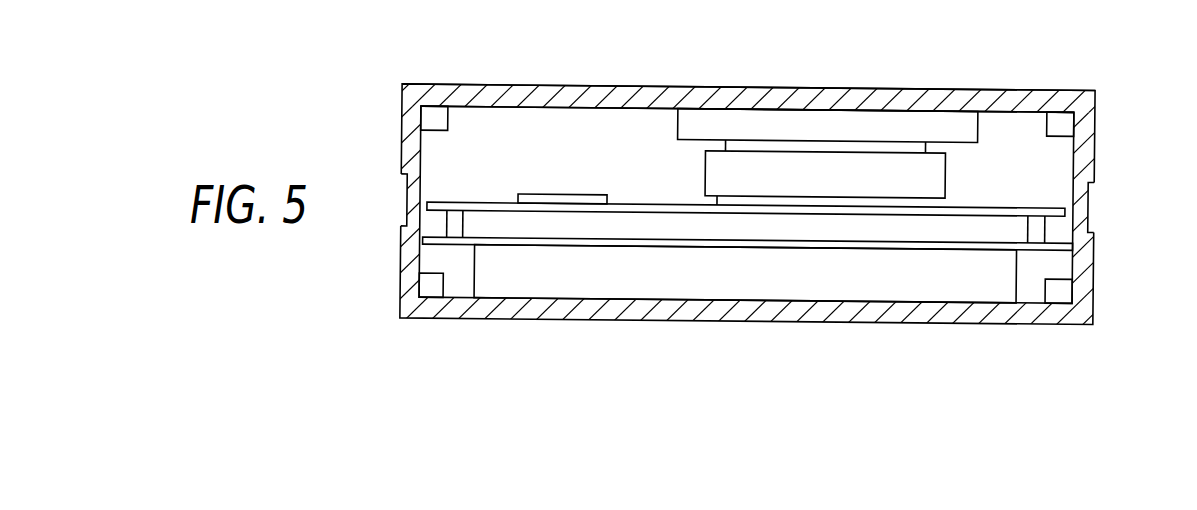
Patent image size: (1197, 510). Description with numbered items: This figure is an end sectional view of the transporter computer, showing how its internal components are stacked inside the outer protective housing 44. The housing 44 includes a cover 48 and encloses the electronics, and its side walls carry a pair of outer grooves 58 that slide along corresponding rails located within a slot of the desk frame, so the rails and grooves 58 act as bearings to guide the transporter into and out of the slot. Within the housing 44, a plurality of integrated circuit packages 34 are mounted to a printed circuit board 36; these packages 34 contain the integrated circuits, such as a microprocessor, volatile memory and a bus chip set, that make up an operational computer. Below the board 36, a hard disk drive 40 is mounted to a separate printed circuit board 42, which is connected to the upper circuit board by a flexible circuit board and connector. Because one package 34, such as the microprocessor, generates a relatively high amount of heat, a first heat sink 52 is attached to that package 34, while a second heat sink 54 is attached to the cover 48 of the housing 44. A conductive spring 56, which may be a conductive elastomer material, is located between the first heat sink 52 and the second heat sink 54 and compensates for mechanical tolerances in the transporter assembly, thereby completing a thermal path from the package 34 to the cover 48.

The outer protective housing 44 is at (551, 82).
The integrated circuit package 34 is at (587, 193).
The printed circuit board 36 is at (483, 208).
The hard disk drive 40 is at (853, 280).
The separate printed circuit board 42 is at (523, 244).
The cover 48 is at (830, 96).
The first heat sink 52 is at (927, 170).
The second heat sink 54 is at (923, 122).
The conductive spring 56 is at (907, 143).
The outer groove 58 is at (407, 203).